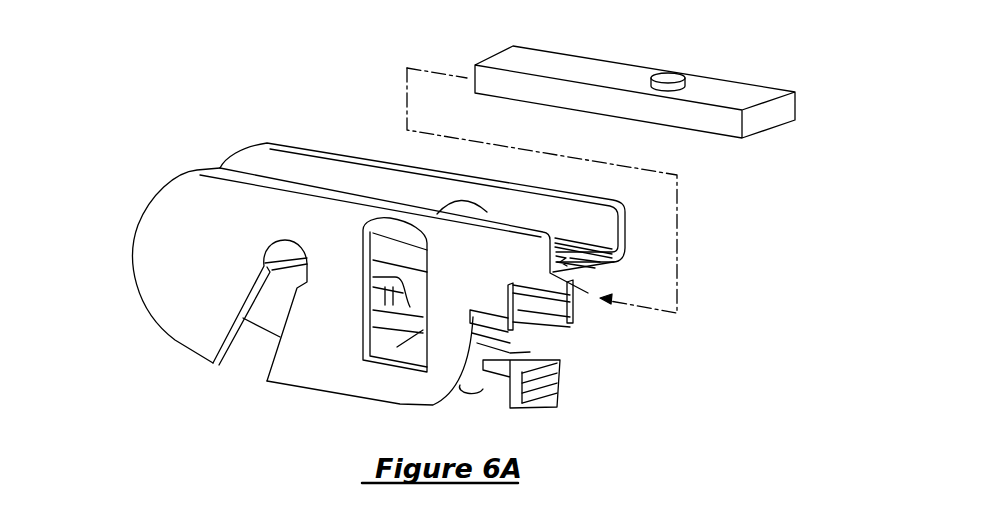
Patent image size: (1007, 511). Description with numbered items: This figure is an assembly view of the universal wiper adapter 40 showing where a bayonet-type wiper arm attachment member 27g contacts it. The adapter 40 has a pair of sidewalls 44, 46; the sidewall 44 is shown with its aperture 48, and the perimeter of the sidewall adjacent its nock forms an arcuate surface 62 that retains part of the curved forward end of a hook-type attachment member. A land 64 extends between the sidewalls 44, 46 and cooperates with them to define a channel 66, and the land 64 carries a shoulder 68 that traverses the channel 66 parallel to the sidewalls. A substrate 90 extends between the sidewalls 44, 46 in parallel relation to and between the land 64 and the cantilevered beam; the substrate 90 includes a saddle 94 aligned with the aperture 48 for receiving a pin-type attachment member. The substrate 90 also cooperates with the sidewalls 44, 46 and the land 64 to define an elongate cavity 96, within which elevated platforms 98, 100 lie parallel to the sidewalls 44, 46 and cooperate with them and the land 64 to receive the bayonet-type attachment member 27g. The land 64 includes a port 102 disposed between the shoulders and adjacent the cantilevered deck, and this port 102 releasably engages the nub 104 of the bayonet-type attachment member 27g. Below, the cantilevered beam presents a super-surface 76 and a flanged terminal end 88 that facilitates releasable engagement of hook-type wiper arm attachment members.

The universal wiper adapter 40 is at (143, 160).
The channel 66 is at (230, 147).
The sidewall 46 is at (320, 150).
The nub 104 is at (667, 75).
The bayonet-type wiper arm attachment member 27g is at (787, 107).
The port 102 is at (560, 246).
The shoulder 68 is at (620, 249).
The land 64 is at (580, 259).
The arcuate surface 62 is at (132, 245).
The saddle 94 is at (377, 272).
The elongate cavity 96 is at (597, 307).
The elevated platform 100 is at (580, 307).
The substrate 90 is at (545, 319).
The elevated platform 98 is at (532, 317).
The super-surface 76 is at (530, 362).
The flanged terminal end 88 is at (550, 393).
The sidewall 44 is at (290, 372).
The aperture 48 is at (378, 365).